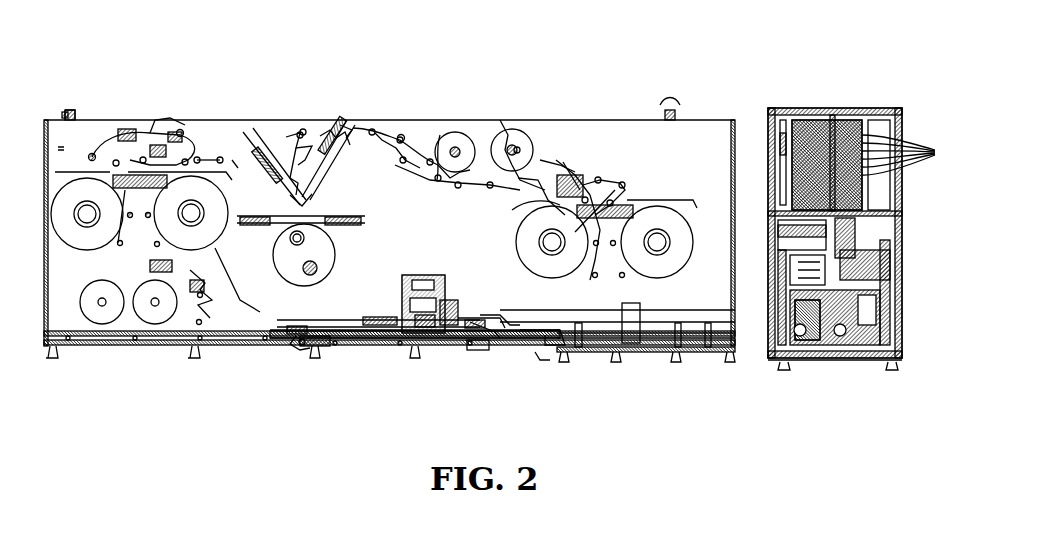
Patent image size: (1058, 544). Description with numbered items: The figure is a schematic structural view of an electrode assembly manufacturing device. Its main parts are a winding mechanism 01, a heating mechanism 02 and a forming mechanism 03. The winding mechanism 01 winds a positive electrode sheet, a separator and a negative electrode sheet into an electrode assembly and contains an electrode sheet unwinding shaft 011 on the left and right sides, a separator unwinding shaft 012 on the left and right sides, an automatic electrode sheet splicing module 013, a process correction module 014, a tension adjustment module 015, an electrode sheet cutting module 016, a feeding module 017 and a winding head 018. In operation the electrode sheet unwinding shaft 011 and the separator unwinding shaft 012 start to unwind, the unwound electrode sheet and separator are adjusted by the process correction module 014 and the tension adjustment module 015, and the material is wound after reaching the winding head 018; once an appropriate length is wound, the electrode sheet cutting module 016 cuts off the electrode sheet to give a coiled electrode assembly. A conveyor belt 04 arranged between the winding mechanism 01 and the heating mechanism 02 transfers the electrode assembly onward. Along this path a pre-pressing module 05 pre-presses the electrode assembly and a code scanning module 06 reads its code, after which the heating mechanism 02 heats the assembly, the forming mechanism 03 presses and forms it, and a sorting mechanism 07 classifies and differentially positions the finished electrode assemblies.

The winding mechanism 01 is at (725, 63).
The electrode sheet unwinding shaft 011 is at (85, 195).
The separator unwinding shaft 012 is at (462, 140).
The automatic electrode sheet splicing module 013 is at (585, 160).
The process correction module 014 is at (560, 170).
The tension adjustment module 015 is at (302, 128).
The electrode sheet cutting module 016 is at (344, 124).
The feeding module 017 is at (298, 232).
The winding head 018 is at (312, 348).
The heating mechanism 02 is at (598, 358).
The forming mechanism 03 is at (757, 205).
The conveyor belt 04 is at (366, 348).
The pre-pressing module 05 is at (420, 345).
The code scanning module 06 is at (484, 350).
The sorting mechanism 07 is at (909, 155).